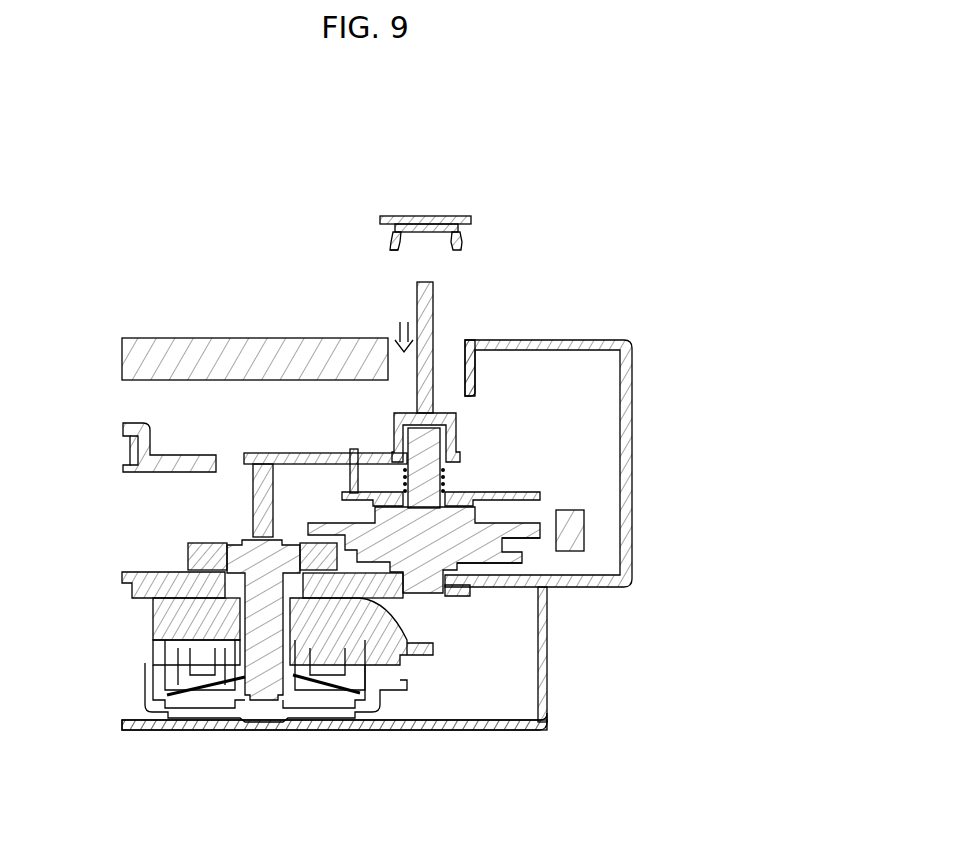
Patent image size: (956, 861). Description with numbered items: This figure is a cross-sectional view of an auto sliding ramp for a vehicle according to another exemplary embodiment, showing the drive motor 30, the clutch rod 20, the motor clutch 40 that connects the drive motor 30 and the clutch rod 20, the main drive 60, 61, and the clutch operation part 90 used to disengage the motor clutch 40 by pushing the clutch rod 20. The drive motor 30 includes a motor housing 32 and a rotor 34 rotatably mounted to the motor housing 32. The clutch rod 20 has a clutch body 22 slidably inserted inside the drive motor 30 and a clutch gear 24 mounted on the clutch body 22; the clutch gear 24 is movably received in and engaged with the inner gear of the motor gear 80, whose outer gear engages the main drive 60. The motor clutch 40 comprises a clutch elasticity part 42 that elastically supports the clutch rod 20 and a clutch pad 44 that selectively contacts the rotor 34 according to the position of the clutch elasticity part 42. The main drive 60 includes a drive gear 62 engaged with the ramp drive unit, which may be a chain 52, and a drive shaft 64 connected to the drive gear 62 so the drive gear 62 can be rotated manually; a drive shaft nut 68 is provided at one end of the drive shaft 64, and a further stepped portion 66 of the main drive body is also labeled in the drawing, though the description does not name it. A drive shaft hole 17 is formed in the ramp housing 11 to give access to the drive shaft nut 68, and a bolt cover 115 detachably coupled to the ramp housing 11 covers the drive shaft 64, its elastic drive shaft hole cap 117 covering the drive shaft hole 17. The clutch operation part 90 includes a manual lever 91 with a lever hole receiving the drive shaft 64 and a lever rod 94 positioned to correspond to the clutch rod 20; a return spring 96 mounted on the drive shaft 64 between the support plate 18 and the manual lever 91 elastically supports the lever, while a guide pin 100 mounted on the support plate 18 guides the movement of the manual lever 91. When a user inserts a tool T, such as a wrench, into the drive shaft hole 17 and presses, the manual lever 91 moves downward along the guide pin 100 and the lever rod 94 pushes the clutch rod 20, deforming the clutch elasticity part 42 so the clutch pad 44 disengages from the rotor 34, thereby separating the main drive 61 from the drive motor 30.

The bolt cover 115 is at (430, 208).
The drive shaft hole cap 117 is at (462, 245).
The ramp housing 11 is at (258, 352).
The tool T is at (434, 295).
The drive shaft hole 17 is at (460, 362).
The main drive 61 is at (548, 485).
The drive shaft nut 68 is at (430, 442).
The drive shaft 64 is at (443, 467).
The return spring 96 is at (447, 483).
The support plate 18 is at (535, 492).
The guide pin 100 is at (354, 450).
The manual lever 91 is at (270, 455).
The lever rod 94 is at (252, 498).
The clutch operation part 90 is at (320, 448).
The main drive 60 is at (436, 604).
The drive gear 62 is at (530, 525).
The step 66 is at (525, 552).
The chain 52 is at (580, 530).
The motor gear 80 is at (185, 553).
The clutch body 22 is at (262, 688).
The clutch gear 24 is at (237, 560).
The motor housing 32 is at (170, 615).
The drive motor 30 is at (140, 638).
The rotor 34 is at (300, 682).
The clutch elasticity part 42 is at (312, 682).
The clutch pad 44 is at (347, 682).
The clutch rod 20 is at (213, 806).
The motor clutch 40 is at (372, 797).